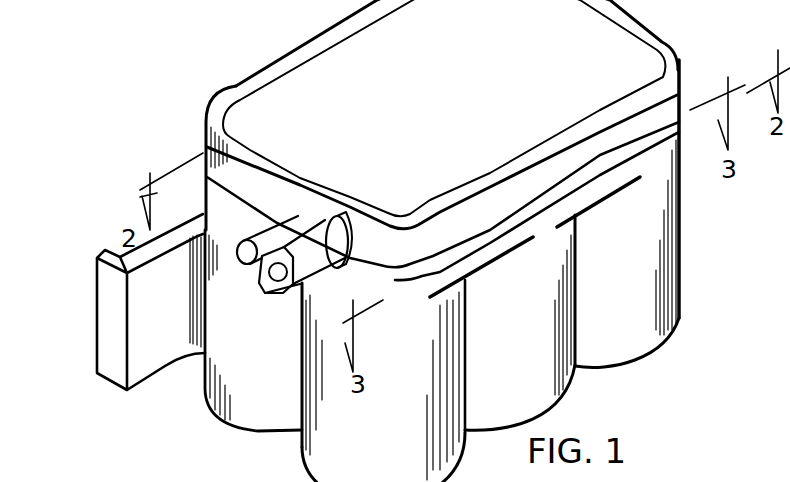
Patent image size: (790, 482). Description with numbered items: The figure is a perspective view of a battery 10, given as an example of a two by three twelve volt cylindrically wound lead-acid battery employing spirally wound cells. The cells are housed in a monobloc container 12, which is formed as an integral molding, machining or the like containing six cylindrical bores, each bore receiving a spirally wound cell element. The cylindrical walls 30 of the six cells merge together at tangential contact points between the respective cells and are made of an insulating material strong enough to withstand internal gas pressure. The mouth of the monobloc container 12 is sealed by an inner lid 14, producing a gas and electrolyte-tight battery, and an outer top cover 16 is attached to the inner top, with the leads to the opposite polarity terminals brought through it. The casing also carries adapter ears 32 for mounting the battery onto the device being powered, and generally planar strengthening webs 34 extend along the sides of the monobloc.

The battery 10 is at (272, 15).
The monobloc container 12 is at (677, 307).
The inner lid 14 is at (500, 230).
The outer top cover 16 is at (268, 117).
The cylindrical walls 30 is at (443, 372).
The adapter ears 32 is at (113, 315).
The strengthening webs 34 is at (597, 190).